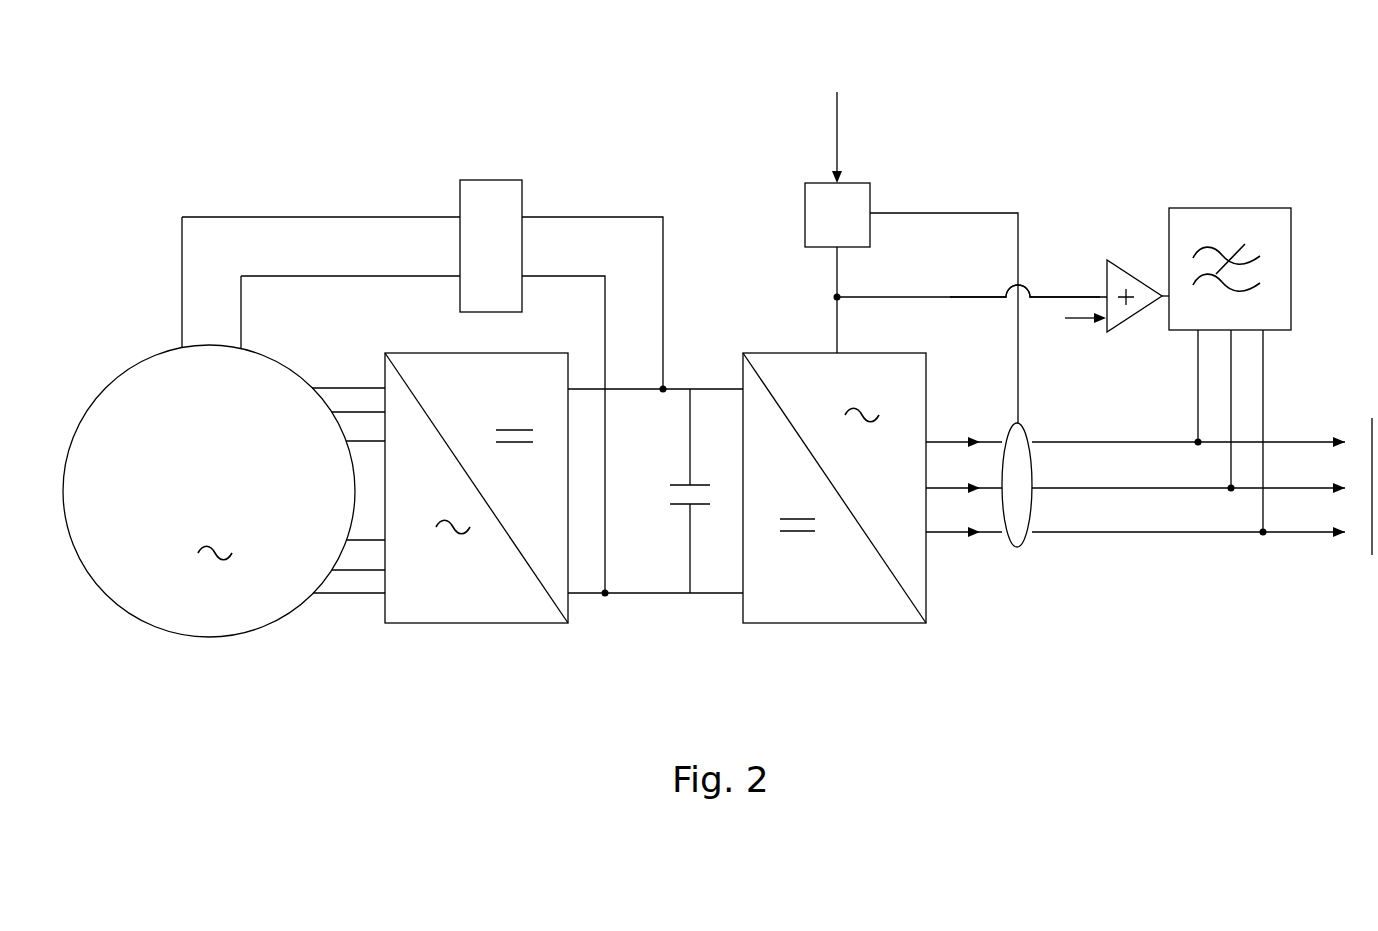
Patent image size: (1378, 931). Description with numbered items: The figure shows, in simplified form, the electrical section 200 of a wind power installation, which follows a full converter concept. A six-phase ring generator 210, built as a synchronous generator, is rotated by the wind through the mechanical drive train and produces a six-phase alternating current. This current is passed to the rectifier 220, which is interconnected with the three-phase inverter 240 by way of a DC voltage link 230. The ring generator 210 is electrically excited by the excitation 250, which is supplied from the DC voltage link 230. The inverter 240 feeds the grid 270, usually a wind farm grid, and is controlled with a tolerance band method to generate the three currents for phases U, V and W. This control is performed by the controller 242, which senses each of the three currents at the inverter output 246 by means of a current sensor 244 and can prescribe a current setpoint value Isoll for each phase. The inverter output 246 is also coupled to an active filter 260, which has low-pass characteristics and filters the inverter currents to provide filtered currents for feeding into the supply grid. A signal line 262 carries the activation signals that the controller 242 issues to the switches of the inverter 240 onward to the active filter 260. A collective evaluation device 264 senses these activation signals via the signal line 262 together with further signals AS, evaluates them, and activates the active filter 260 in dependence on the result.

The electrical section 200 is at (1058, 96).
The 6-phase ring generator 210 is at (265, 627).
The rectifier 220 is at (527, 623).
The DC voltage link 230 is at (672, 610).
The 3-phase inverter 240 is at (888, 623).
The controller 242 is at (853, 183).
The current sensor 244 is at (1035, 420).
The inverter output 246 is at (949, 553).
The excitation 250 is at (493, 180).
The active filter 260 is at (1237, 208).
The signal line 262 is at (1053, 297).
The collective evaluation device 264 is at (1122, 265).
The grid 270 is at (1368, 518).